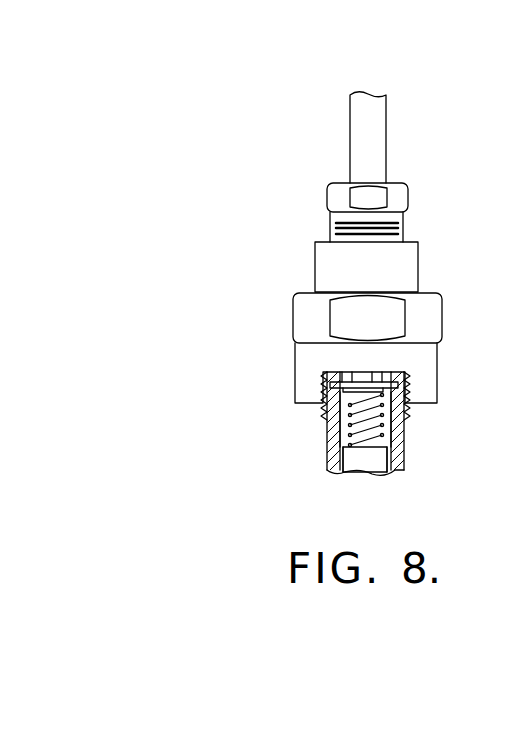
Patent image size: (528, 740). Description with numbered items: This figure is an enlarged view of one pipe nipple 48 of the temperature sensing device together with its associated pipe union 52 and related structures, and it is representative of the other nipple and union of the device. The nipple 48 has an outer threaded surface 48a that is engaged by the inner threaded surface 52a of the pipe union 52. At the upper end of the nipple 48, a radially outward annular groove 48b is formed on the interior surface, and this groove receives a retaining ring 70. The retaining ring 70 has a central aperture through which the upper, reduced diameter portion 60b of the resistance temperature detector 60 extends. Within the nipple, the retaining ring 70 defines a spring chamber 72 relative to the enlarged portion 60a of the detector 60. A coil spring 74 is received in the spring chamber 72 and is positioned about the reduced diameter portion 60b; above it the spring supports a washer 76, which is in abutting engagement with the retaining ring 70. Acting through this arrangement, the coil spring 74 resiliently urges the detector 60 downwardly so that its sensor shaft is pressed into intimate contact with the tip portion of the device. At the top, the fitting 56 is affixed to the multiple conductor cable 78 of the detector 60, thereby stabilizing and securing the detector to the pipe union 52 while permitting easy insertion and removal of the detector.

The multiple conductor cable 78 is at (386, 113).
The fitting 56 is at (408, 196).
The pipe union 52 is at (427, 358).
The inner threaded surface 52a is at (410, 370).
The pipe nipple 48 is at (326, 453).
The outer threaded surface 48a is at (407, 413).
The annular groove 48b is at (322, 368).
The resistance temperature detector 60 is at (344, 482).
The enlarged portion 60a is at (366, 462).
The reduced diameter portion 60b is at (369, 378).
The retaining ring 70 is at (346, 375).
The spring chamber 72 is at (407, 418).
The coil spring 74 is at (350, 436).
The washer 76 is at (394, 430).